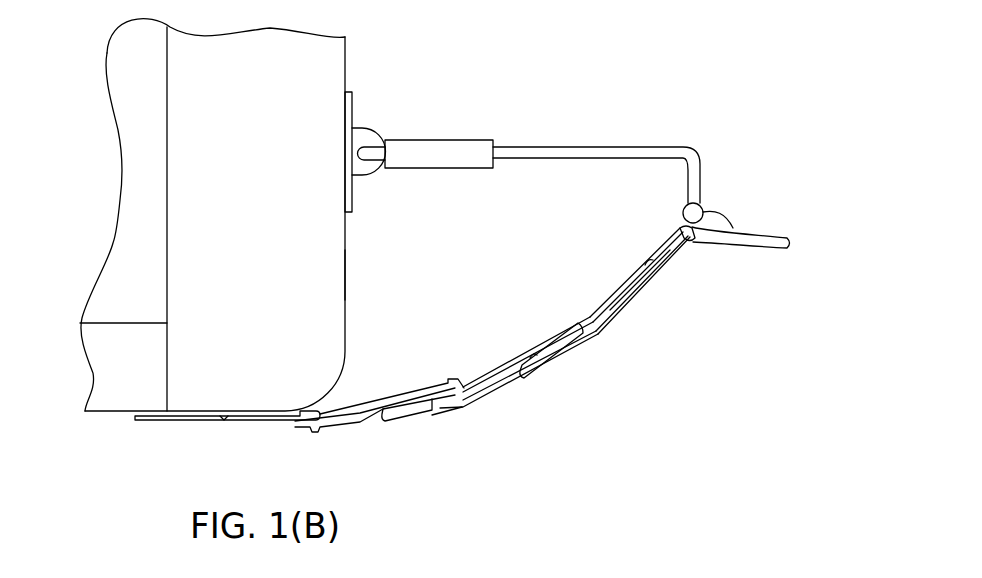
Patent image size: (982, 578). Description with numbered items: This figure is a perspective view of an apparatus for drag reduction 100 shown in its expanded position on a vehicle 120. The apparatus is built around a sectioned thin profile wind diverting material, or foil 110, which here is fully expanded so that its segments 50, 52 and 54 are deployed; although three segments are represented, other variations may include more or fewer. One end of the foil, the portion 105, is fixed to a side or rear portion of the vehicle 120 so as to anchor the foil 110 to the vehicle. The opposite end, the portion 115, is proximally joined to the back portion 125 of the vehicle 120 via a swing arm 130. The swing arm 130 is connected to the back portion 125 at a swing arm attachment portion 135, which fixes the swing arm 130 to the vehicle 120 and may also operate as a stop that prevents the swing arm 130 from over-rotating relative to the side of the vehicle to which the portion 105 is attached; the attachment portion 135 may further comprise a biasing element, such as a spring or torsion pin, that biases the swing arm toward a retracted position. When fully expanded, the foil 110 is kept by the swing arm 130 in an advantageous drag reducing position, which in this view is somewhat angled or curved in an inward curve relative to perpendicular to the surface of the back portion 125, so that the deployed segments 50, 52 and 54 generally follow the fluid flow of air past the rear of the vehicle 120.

The apparatus for drag reduction 100 is at (680, 113).
The portion of the sectioned foil 105 is at (197, 420).
The sectioned thin profile wind diverting material (foil) 110 is at (513, 353).
The another portion of the sectioned foil 115 is at (703, 208).
The vehicle 120 is at (345, 66).
The back portion 125 is at (345, 273).
The swing arm 130 is at (555, 147).
The swing arm attachment portion 135 is at (365, 176).
The segment 50 is at (368, 422).
The segment 52 is at (497, 388).
The segment 54 is at (627, 305).